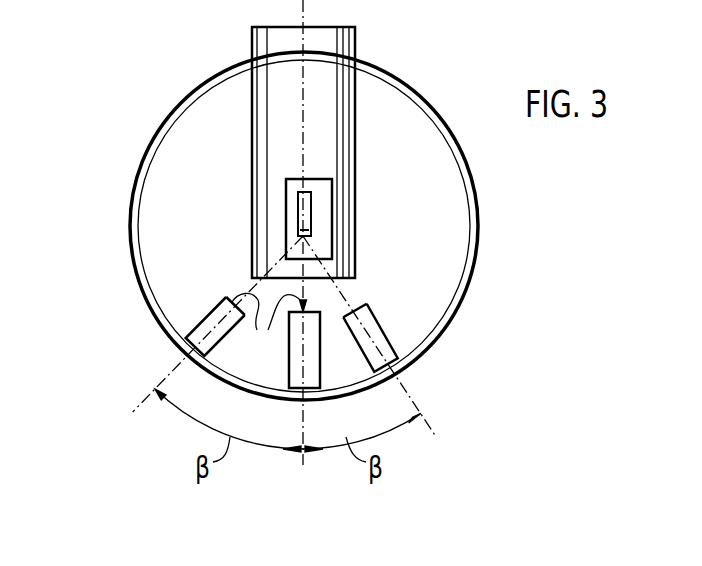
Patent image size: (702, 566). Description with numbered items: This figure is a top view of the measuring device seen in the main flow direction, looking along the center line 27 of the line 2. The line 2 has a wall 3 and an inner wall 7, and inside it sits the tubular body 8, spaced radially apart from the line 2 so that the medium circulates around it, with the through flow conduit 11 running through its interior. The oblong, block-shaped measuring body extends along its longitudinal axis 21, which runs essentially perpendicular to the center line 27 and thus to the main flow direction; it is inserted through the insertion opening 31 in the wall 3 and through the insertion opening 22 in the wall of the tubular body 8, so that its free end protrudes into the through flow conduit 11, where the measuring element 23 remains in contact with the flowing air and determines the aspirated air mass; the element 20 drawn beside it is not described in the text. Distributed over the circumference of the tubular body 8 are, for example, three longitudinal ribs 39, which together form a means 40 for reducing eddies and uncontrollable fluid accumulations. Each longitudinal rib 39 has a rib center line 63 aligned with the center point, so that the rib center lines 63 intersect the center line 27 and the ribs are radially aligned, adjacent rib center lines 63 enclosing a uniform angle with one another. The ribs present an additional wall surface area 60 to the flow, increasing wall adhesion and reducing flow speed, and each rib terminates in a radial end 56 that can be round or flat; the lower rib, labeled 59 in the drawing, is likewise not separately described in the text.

The line 2 is at (276, 218).
The through flow conduit 11 is at (276, 218).
The wall 3 is at (345, 210).
The tubular body 8 is at (478, 228).
The inner wall 7 is at (147, 197).
The insertion opening 22 is at (358, 149).
The insertion opening 31 is at (358, 149).
The longitudinal axis 21 is at (303, 146).
The measuring element 23 is at (333, 196).
The slot 20 is at (310, 206).
The center line 27 is at (298, 222).
The rib center lines 63 is at (170, 373).
The longitudinal rib 39 is at (292, 387).
The means for reducing eddies 40 is at (196, 328).
The additional wall surface area 60 is at (223, 298).
The radial end 56 is at (388, 262).
The central rod 59 is at (321, 380).